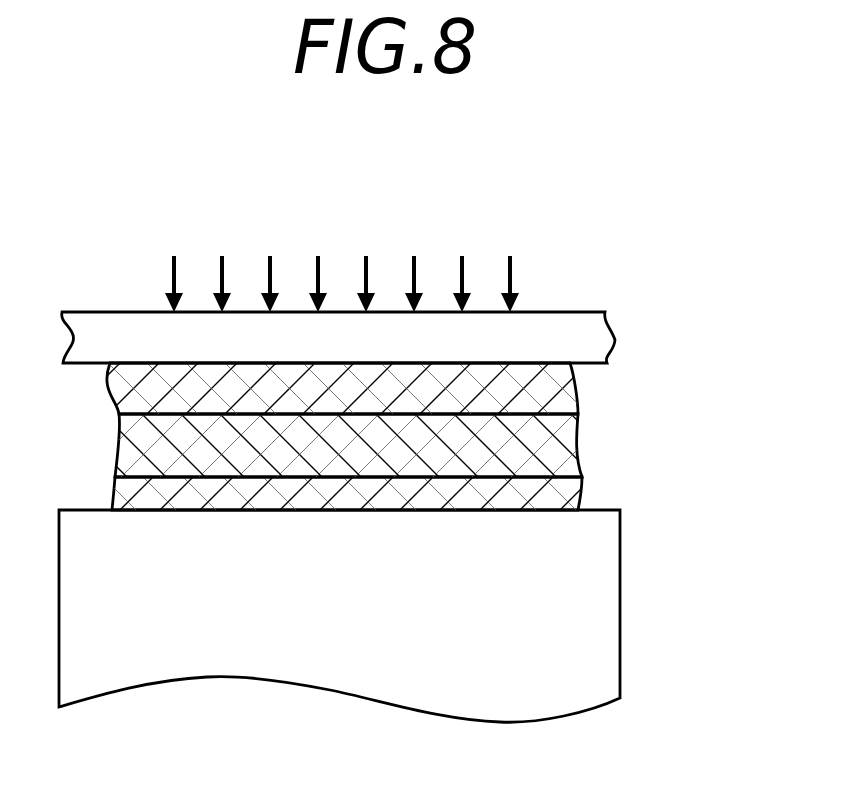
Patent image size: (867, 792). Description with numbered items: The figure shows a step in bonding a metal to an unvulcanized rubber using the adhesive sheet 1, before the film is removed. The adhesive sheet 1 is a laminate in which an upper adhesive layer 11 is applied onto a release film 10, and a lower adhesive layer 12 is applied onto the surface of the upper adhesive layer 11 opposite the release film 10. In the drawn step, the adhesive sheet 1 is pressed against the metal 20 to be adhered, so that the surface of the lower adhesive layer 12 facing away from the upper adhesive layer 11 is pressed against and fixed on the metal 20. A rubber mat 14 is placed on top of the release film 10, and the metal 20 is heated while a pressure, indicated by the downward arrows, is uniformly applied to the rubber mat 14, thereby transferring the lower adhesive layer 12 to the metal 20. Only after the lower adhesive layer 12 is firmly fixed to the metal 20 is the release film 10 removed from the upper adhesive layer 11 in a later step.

The adhesive sheet 1 is at (594, 403).
The release film 10 is at (547, 392).
The upper adhesive layer 11 is at (550, 447).
The lower adhesive layer 12 is at (548, 497).
The rubber mat 14 is at (582, 322).
The metal 20 is at (605, 557).